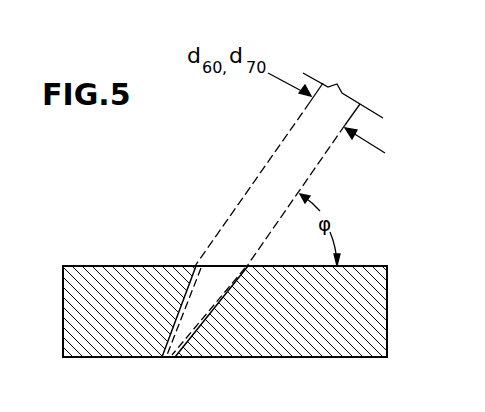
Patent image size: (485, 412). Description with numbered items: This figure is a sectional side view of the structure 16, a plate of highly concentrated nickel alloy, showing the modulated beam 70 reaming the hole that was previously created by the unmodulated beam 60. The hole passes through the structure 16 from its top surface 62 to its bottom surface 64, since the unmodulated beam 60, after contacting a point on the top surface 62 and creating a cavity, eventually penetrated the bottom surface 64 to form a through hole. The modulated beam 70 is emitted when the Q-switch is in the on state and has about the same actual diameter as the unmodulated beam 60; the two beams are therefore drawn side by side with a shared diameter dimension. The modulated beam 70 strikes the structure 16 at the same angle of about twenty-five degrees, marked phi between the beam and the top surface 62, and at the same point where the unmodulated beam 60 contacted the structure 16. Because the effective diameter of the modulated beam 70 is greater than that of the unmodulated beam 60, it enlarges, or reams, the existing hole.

The structure 16 is at (139, 319).
The top surface 62 is at (142, 266).
The bottom surface 64 is at (142, 358).
The unmodulated beam 60 is at (320, 162).
The modulated beam 70 is at (265, 165).